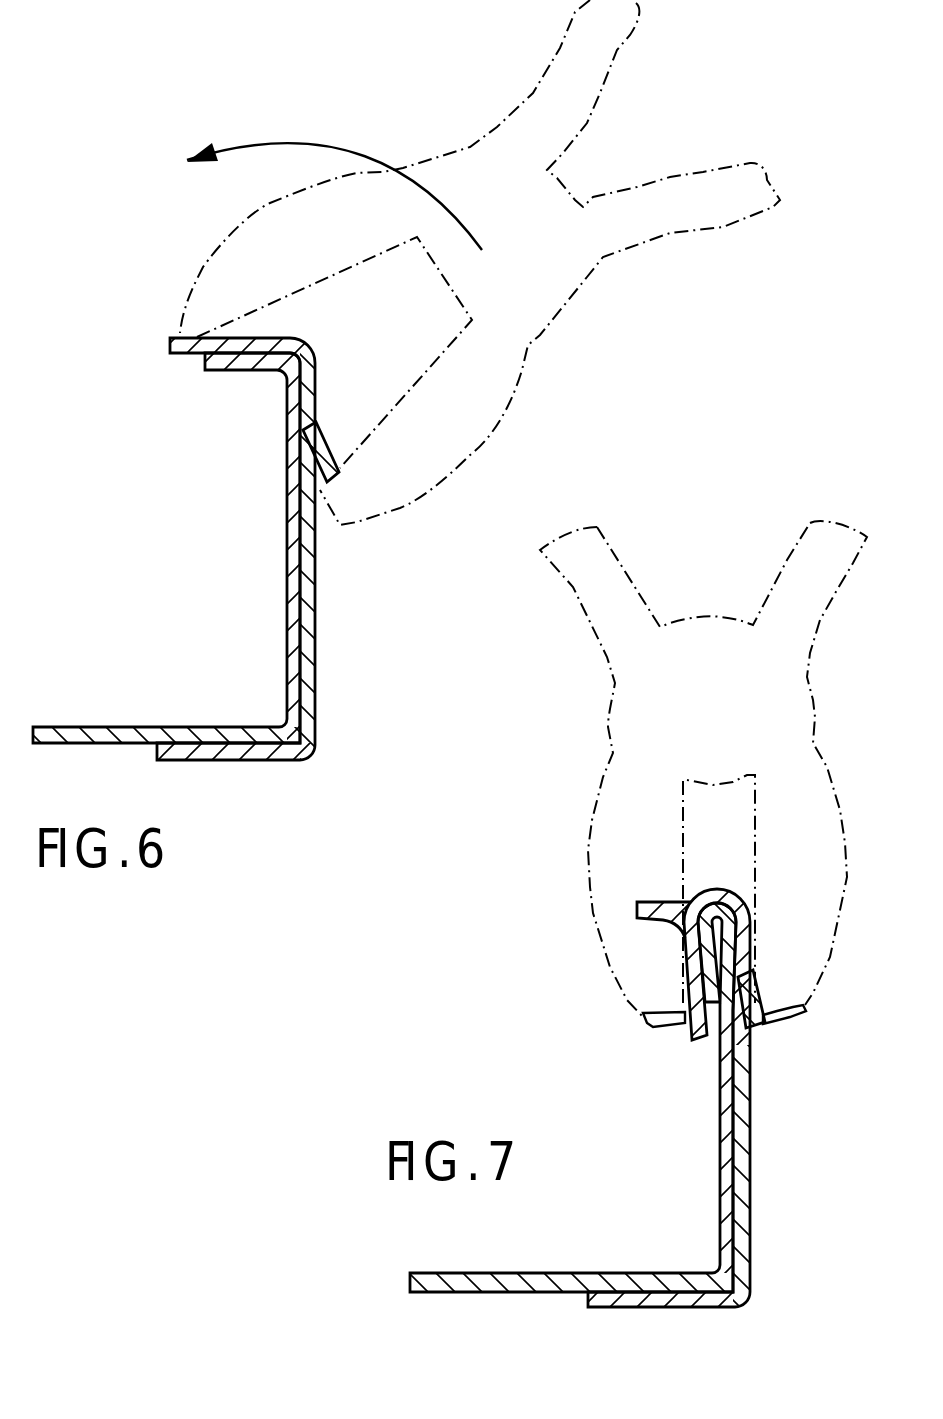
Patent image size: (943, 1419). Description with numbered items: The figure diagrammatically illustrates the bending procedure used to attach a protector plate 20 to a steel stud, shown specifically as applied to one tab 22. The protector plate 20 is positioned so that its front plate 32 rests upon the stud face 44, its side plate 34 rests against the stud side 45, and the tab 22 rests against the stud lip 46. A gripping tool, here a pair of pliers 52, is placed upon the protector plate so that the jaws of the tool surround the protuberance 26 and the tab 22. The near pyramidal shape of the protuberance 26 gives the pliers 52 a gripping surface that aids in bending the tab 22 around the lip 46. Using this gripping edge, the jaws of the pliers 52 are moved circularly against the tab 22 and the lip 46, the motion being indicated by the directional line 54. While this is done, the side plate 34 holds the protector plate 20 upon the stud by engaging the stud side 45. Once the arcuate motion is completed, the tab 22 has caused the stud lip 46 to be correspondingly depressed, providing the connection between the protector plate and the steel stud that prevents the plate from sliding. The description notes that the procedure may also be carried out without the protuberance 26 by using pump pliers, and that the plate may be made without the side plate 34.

In FIG. 6, the protector plate 20 is at (347, 670).
In FIG. 7, the protector plate 20 is at (792, 1265).
In FIG. 6, the tab 22 is at (180, 338).
In FIG. 7, the tab 22 is at (643, 1017).
In FIG. 6, the protuberance 26 is at (331, 456).
In FIG. 7, the protuberance 26 is at (806, 1008).
In FIG. 6, the front plate 32 is at (318, 600).
In FIG. 7, the front plate 32 is at (752, 1120).
In FIG. 6, the side plate 34 is at (270, 760).
In FIG. 7, the side plate 34 is at (680, 1307).
In FIG. 6, the stud face 44 is at (287, 655).
In FIG. 7, the stud face 44 is at (720, 1196).
In FIG. 6, the stud side 45 is at (123, 727).
In FIG. 7, the stud side 45 is at (562, 1273).
In FIG. 6, the stud lip 46 is at (227, 372).
In FIG. 7, the stud lip 46 is at (712, 1045).
In FIG. 6, the pliers 52 is at (704, 172).
In FIG. 7, the pliers 52 is at (721, 625).
In FIG. 6, the directional line 54 is at (345, 145).